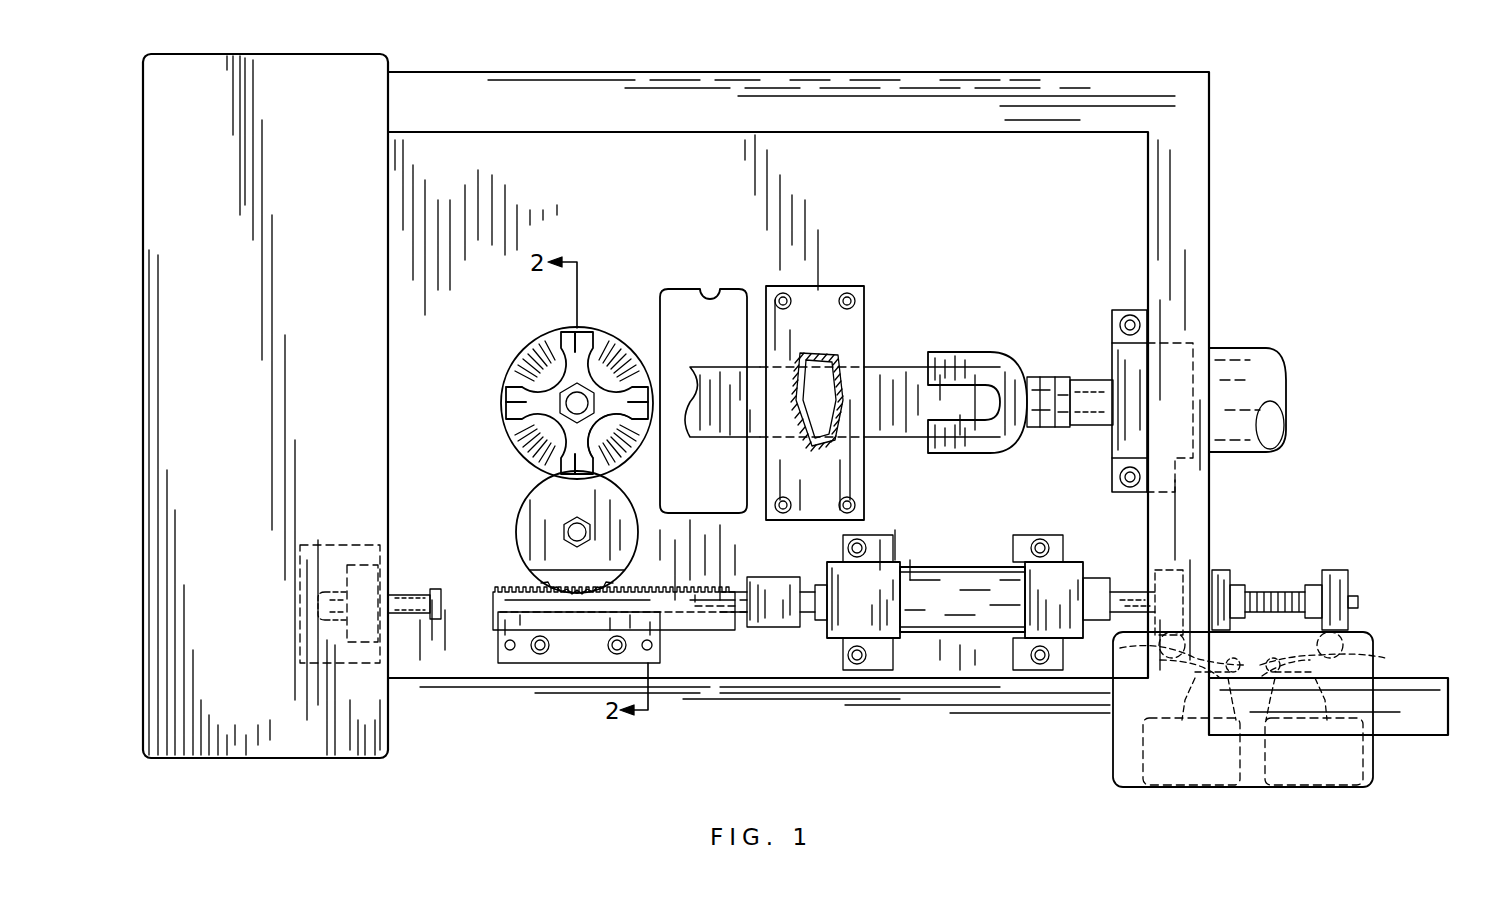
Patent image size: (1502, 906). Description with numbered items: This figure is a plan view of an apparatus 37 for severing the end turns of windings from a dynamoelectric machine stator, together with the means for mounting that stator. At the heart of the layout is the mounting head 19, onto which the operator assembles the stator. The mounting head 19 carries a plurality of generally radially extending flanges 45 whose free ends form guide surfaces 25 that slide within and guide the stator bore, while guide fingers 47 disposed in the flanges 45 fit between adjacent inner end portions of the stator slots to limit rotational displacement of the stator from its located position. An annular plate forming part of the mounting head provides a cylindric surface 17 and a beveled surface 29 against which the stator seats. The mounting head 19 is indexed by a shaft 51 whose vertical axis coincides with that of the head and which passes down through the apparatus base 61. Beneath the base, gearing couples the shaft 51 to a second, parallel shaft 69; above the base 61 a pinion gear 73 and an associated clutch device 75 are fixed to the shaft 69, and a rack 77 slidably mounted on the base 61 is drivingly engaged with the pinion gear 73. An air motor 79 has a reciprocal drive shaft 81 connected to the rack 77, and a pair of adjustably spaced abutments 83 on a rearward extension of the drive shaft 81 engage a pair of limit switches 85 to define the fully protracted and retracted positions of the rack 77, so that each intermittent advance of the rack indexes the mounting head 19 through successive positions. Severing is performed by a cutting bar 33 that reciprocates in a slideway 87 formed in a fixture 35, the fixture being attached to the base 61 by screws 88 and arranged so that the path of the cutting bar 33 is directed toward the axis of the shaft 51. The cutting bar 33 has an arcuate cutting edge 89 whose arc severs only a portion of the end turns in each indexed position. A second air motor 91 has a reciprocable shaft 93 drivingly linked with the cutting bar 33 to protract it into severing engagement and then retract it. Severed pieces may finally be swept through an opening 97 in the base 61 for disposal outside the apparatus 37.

The cylindric surface 17 is at (598, 338).
The mounting head 19 is at (556, 384).
The guide surfaces 25 is at (512, 420).
The beveled surface 29 is at (548, 345).
The cutting bar 33 is at (718, 432).
The fixture 35 is at (837, 385).
The apparatus 37 is at (1222, 226).
The flanges 45 is at (612, 455).
The guide fingers 47 is at (530, 385).
The shaft 51 is at (582, 402).
The apparatus base 61 is at (1014, 240).
The shaft 69 is at (572, 524).
The pinion gear 73 is at (582, 572).
The clutch device 75 is at (639, 530).
The rack 77 is at (692, 622).
The air motor 79 is at (975, 610).
The drive shaft 81 is at (1128, 592).
The abutments 83 is at (1225, 572).
The limit switches 85 is at (1120, 648).
The slideway 87 is at (812, 446).
The screws 88 is at (848, 292).
The cutting edge 89 is at (688, 378).
The air motor 91 is at (1240, 358).
The reciprocable shaft 93 is at (1098, 378).
The opening 97 is at (703, 378).